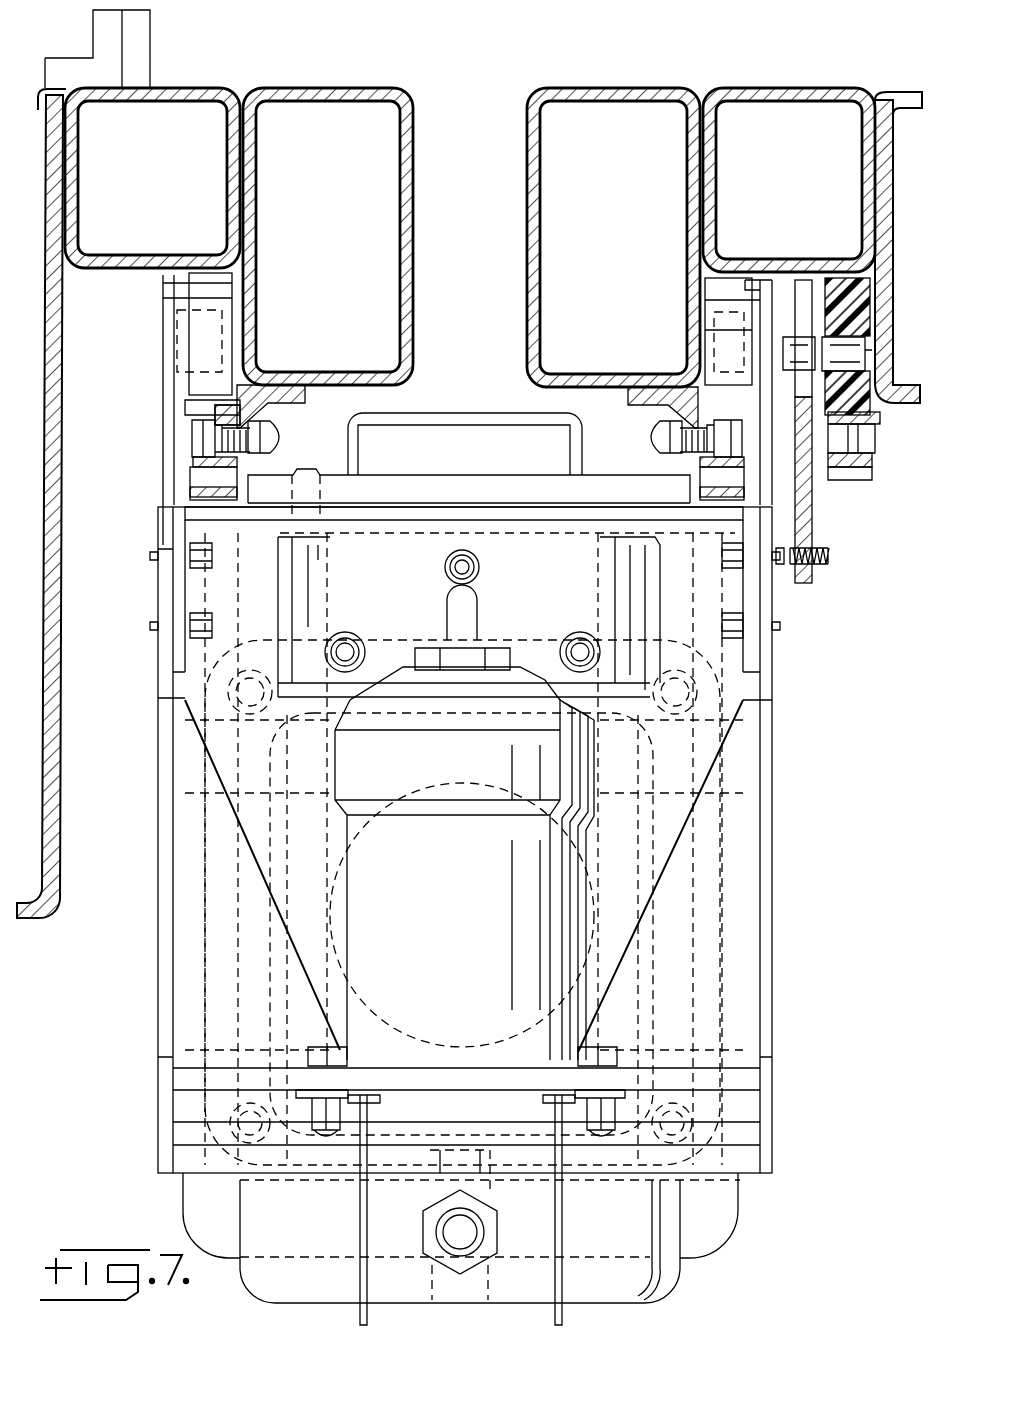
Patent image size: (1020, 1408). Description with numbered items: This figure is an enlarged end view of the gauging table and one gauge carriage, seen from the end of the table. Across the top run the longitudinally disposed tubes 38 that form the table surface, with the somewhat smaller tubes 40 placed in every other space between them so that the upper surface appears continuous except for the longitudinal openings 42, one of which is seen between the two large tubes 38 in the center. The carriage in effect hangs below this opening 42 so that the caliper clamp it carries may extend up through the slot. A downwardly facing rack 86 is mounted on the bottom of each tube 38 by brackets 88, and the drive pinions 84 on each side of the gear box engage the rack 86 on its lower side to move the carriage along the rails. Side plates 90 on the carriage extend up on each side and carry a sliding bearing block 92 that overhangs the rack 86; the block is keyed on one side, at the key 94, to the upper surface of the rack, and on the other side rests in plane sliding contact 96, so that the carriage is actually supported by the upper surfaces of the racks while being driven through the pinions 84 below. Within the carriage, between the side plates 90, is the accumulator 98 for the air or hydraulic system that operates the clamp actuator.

The tubes 38 is at (374, 90).
The smaller tubes 40 is at (822, 90).
The longitudinal openings 42 is at (468, 110).
The drive pinions 84 is at (200, 495).
The rack 86 is at (198, 458).
The brackets 88 is at (300, 396).
The side plates 90 is at (160, 848).
The sliding bearing block 92 is at (190, 308).
The key 94 is at (210, 402).
The plane sliding contact 96 is at (712, 395).
The accumulator 98 is at (462, 805).